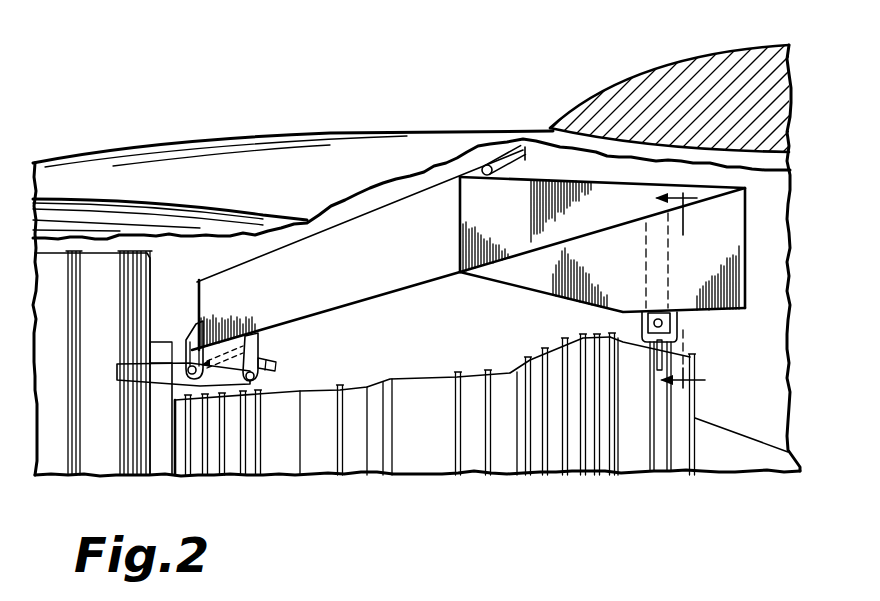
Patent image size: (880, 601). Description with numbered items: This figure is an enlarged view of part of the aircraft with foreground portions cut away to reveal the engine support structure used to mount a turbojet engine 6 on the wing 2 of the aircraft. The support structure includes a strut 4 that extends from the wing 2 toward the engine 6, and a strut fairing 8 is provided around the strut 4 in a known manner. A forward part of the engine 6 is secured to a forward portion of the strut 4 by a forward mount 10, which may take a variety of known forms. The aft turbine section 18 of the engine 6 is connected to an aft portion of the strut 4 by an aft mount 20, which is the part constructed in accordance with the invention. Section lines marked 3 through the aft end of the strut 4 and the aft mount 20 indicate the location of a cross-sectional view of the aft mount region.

The wing 2 is at (703, 80).
The section line 3- 3 is at (683, 290).
The strut 4 is at (505, 283).
The turbojet engine 6 is at (333, 478).
The strut fairing 8 is at (340, 187).
The forward mount 10 is at (270, 345).
The aft turbine section 18 is at (643, 453).
The aft mount 20 is at (680, 318).